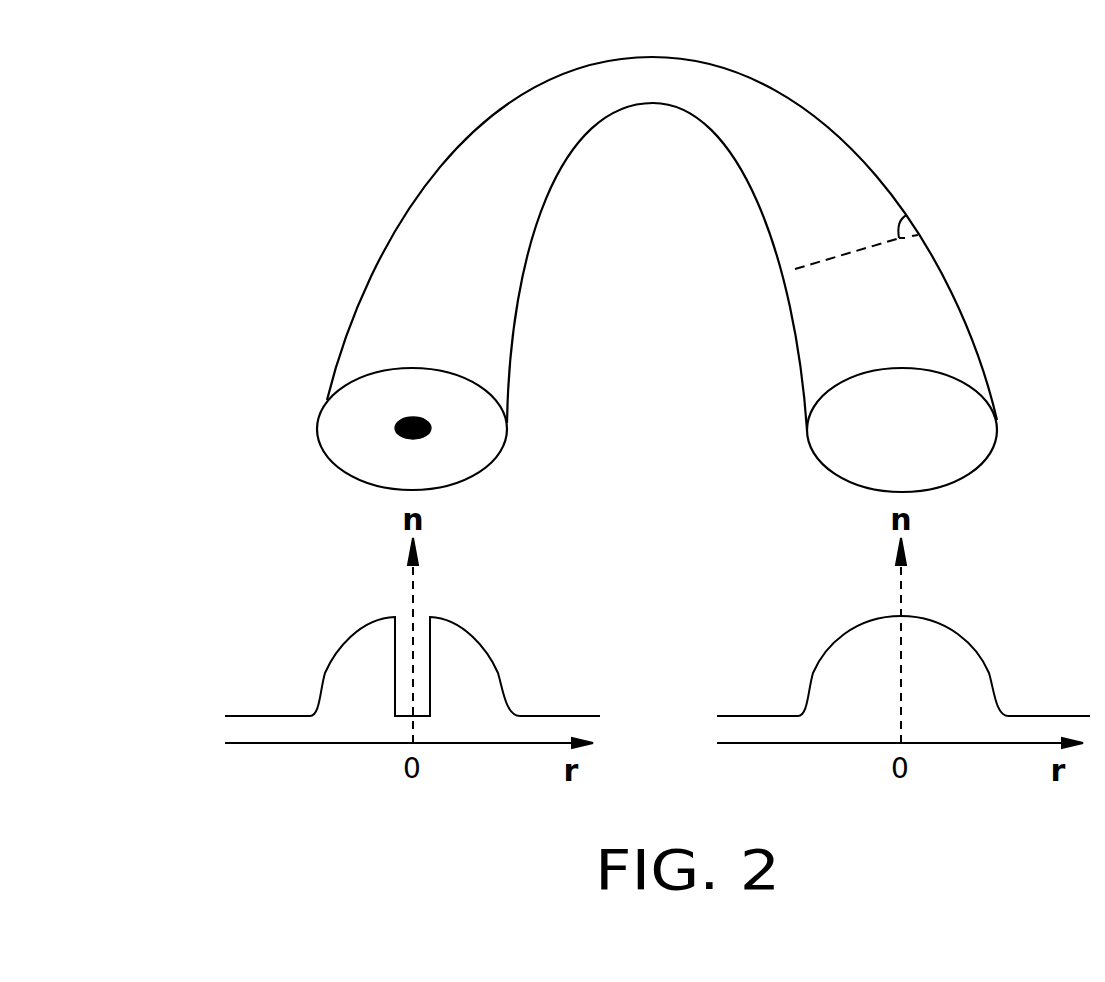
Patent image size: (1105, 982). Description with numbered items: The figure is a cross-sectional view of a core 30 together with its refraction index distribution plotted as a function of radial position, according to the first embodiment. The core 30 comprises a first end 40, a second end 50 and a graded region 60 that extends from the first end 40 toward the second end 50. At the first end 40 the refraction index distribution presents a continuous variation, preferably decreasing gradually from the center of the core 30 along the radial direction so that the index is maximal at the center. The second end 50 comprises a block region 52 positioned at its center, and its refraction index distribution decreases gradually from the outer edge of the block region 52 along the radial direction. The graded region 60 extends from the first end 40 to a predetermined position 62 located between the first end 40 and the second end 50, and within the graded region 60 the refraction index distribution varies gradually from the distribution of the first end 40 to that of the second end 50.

The core 30 is at (880, 180).
The first end 40 is at (970, 433).
The second end 50 is at (480, 435).
The block region 52 is at (413, 418).
The graded region 60 is at (930, 315).
The predetermined position 62 is at (907, 215).